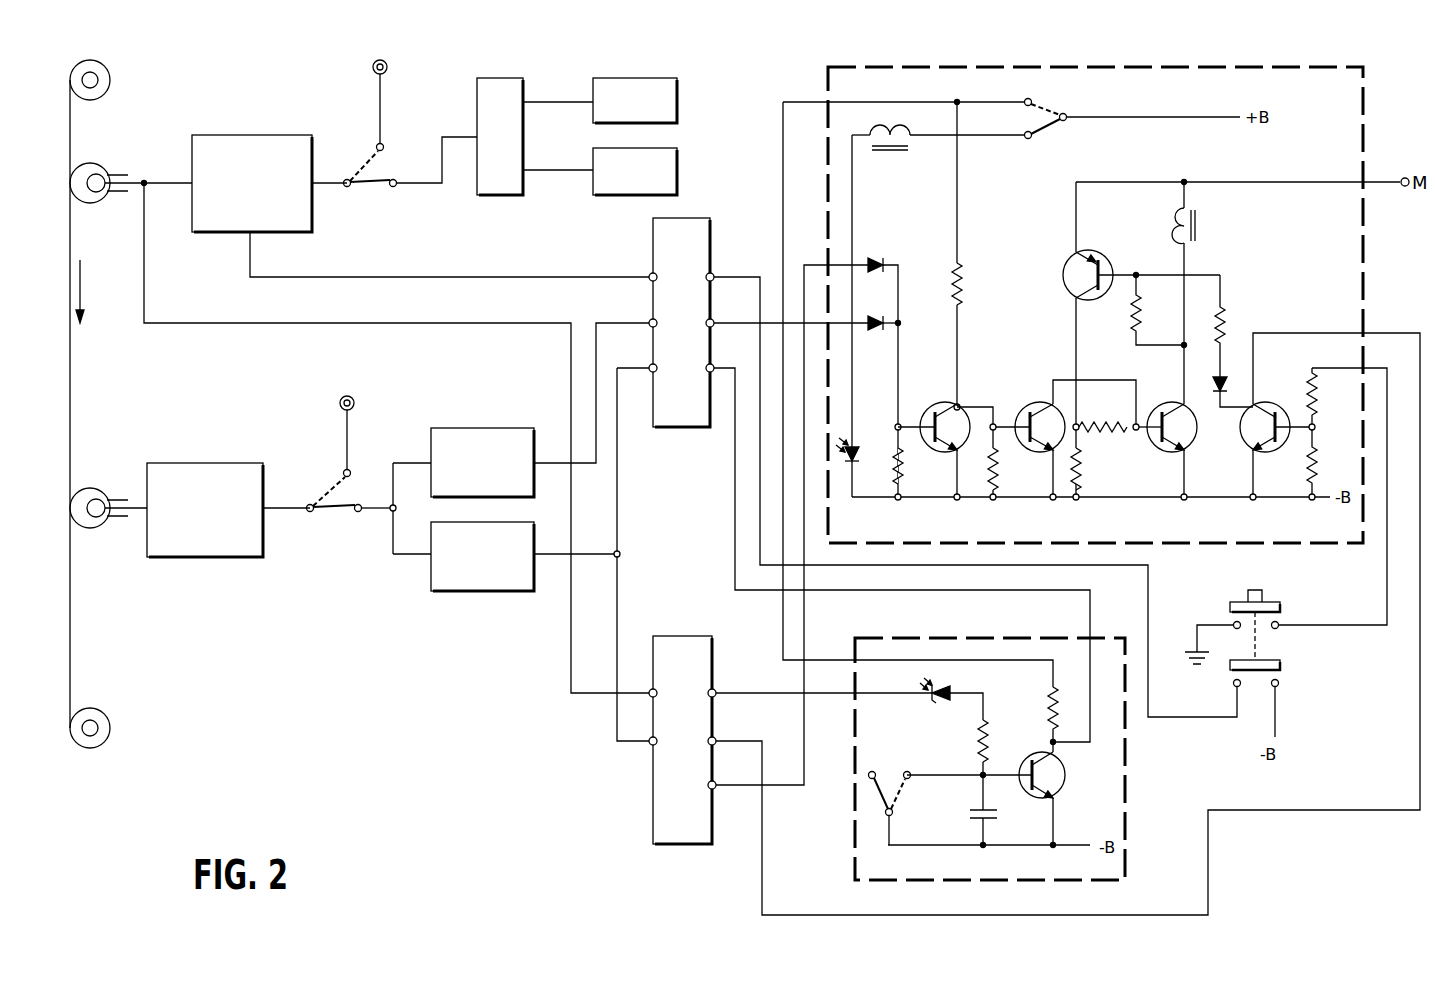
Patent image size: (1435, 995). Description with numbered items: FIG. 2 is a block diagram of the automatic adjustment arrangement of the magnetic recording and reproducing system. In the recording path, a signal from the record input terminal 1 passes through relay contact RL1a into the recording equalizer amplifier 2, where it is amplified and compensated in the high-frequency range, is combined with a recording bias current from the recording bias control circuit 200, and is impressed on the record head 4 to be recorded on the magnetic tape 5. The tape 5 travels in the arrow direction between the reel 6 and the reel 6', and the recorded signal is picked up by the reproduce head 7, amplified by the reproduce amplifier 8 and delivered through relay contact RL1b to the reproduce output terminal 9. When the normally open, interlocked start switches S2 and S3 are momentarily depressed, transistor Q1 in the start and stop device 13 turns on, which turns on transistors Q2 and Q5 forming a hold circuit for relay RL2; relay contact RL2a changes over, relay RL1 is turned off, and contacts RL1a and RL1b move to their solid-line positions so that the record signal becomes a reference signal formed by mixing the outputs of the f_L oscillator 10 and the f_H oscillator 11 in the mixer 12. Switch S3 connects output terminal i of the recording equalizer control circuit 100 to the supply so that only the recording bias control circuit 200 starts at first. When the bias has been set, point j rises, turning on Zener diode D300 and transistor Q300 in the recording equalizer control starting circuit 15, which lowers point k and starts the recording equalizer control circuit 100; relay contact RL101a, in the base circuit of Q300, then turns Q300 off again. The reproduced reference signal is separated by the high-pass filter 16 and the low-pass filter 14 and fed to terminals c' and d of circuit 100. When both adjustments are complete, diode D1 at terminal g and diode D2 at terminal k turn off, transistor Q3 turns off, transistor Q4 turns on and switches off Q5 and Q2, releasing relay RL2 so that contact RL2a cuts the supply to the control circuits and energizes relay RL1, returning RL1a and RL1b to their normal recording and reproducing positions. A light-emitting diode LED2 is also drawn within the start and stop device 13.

The record input terminal 1 is at (387, 66).
The recording equalizer amplifier 2 is at (283, 134).
The record head 4 is at (102, 168).
The magnetic tape 5 is at (72, 393).
The reel 6 is at (106, 80).
The reel 6' is at (105, 723).
The reproduce head 7 is at (96, 531).
The reproduce amplifier 8 is at (253, 463).
The reproduce output terminal 9 is at (354, 401).
The f_L oscillator 10 is at (680, 93).
The f_H oscillator 11 is at (679, 183).
The mixer 12 is at (477, 103).
The start and stop device 13 is at (827, 82).
The low-pass filter 14 is at (497, 591).
The recording equalizer control starting circuit 15 is at (1128, 782).
The high-pass filter 16 is at (485, 428).
The recording equalizer control circuit 100 is at (712, 232).
The recording bias control circuit 200 is at (696, 636).
The relay contact RL1a is at (376, 190).
The relay contact RL1b is at (343, 514).
The relay RL1 is at (893, 152).
The relay RL2 is at (1199, 224).
The relay contact RL2a is at (1050, 112).
The diode D1 is at (880, 258).
The diode D2 is at (882, 316).
The light emitting diode LED2 is at (858, 446).
The transistor Q1 is at (1262, 405).
The transistor Q2 is at (1068, 292).
The transistor Q3 is at (942, 402).
The transistor Q4 is at (1038, 402).
The transistor Q5 is at (1187, 450).
The start switch S2 is at (1268, 601).
The start switch S3 is at (1282, 668).
The Zener diode D300 is at (940, 708).
The transistor Q300 is at (1066, 770).
The relay contact RL101a is at (893, 798).